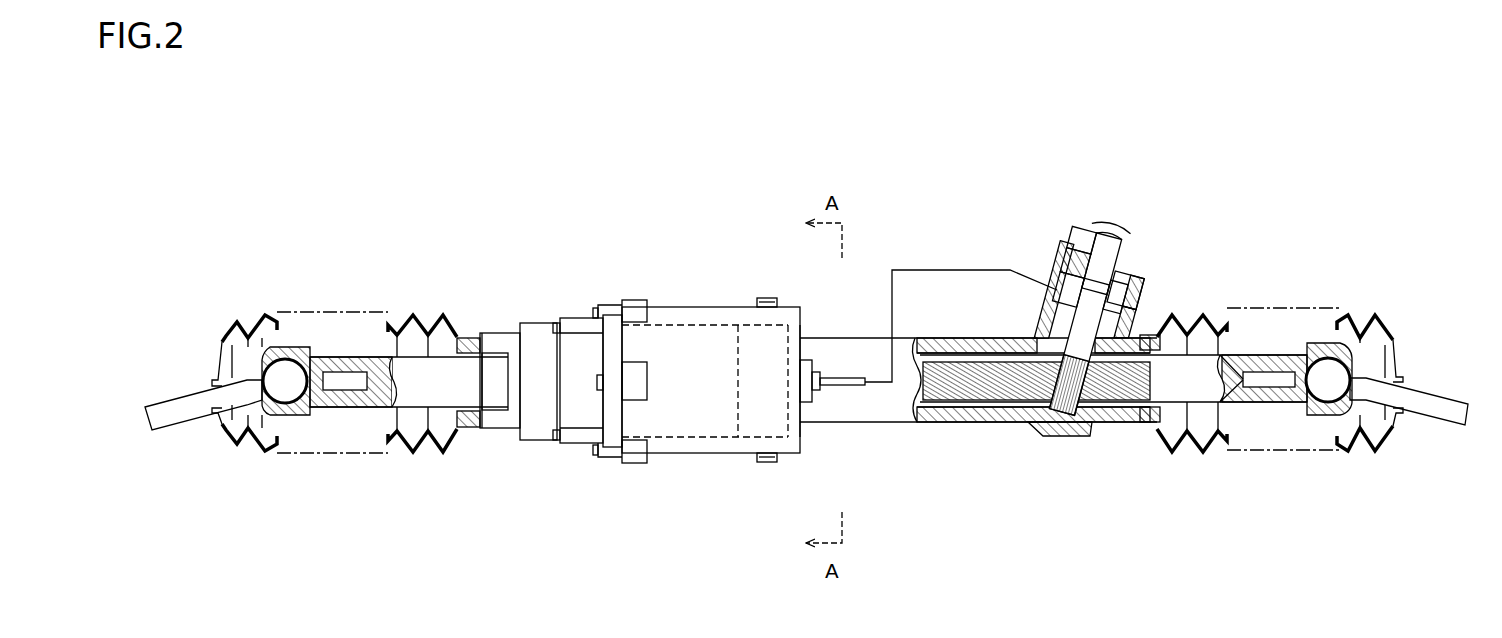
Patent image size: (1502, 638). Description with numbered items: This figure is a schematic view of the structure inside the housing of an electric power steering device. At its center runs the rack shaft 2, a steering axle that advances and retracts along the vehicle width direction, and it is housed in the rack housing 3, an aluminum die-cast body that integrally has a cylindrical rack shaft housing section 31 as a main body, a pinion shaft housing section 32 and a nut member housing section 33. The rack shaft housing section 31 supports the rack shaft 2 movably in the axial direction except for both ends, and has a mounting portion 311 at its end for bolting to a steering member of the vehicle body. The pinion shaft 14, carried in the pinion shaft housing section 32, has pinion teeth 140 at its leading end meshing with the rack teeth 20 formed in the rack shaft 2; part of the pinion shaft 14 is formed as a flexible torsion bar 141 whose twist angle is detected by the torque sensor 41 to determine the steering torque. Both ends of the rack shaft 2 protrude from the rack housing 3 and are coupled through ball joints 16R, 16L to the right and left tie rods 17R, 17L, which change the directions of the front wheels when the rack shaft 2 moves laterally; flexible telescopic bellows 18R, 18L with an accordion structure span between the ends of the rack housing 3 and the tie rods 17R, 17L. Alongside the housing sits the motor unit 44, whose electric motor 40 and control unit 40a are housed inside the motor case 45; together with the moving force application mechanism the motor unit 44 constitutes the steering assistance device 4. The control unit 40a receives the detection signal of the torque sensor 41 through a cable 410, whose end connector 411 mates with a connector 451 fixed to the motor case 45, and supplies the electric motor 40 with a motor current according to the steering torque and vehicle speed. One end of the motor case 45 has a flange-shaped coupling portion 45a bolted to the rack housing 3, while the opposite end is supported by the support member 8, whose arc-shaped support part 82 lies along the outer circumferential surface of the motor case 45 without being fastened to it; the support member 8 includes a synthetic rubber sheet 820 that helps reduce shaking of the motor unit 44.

The rack shaft 2 is at (1183, 348).
The rack housing 3 is at (582, 302).
The steering assistance device 4 is at (592, 481).
The support member 8 is at (752, 287).
The pinion shaft 14 is at (1097, 243).
The ball joint 16R is at (255, 360).
The ball joint 16L is at (1360, 360).
The tie rod 17R is at (180, 413).
The tie rod 17L is at (1413, 408).
The telescopic bellows 18R is at (218, 340).
The telescopic bellows 18L is at (1392, 342).
The rack teeth 20 is at (1097, 397).
The rack shaft housing section 31 is at (895, 425).
The pinion shaft housing section 32 is at (1133, 283).
The nut member housing section 33 is at (545, 323).
The electric motor 40 is at (675, 427).
The control unit 40a is at (778, 427).
The torque sensor 41 is at (1070, 297).
The motor unit 44 is at (632, 468).
The motor case 45 is at (675, 313).
The coupling portion 45a is at (635, 303).
The support part 82 is at (765, 298).
The pinion teeth 140 is at (1057, 407).
The torsion bar 141 is at (1067, 277).
The mounting portion 311 is at (497, 403).
The cable 410 is at (847, 387).
The connector 411 is at (818, 378).
The connector 451 is at (807, 365).
The rubber sheet 820 is at (775, 298).